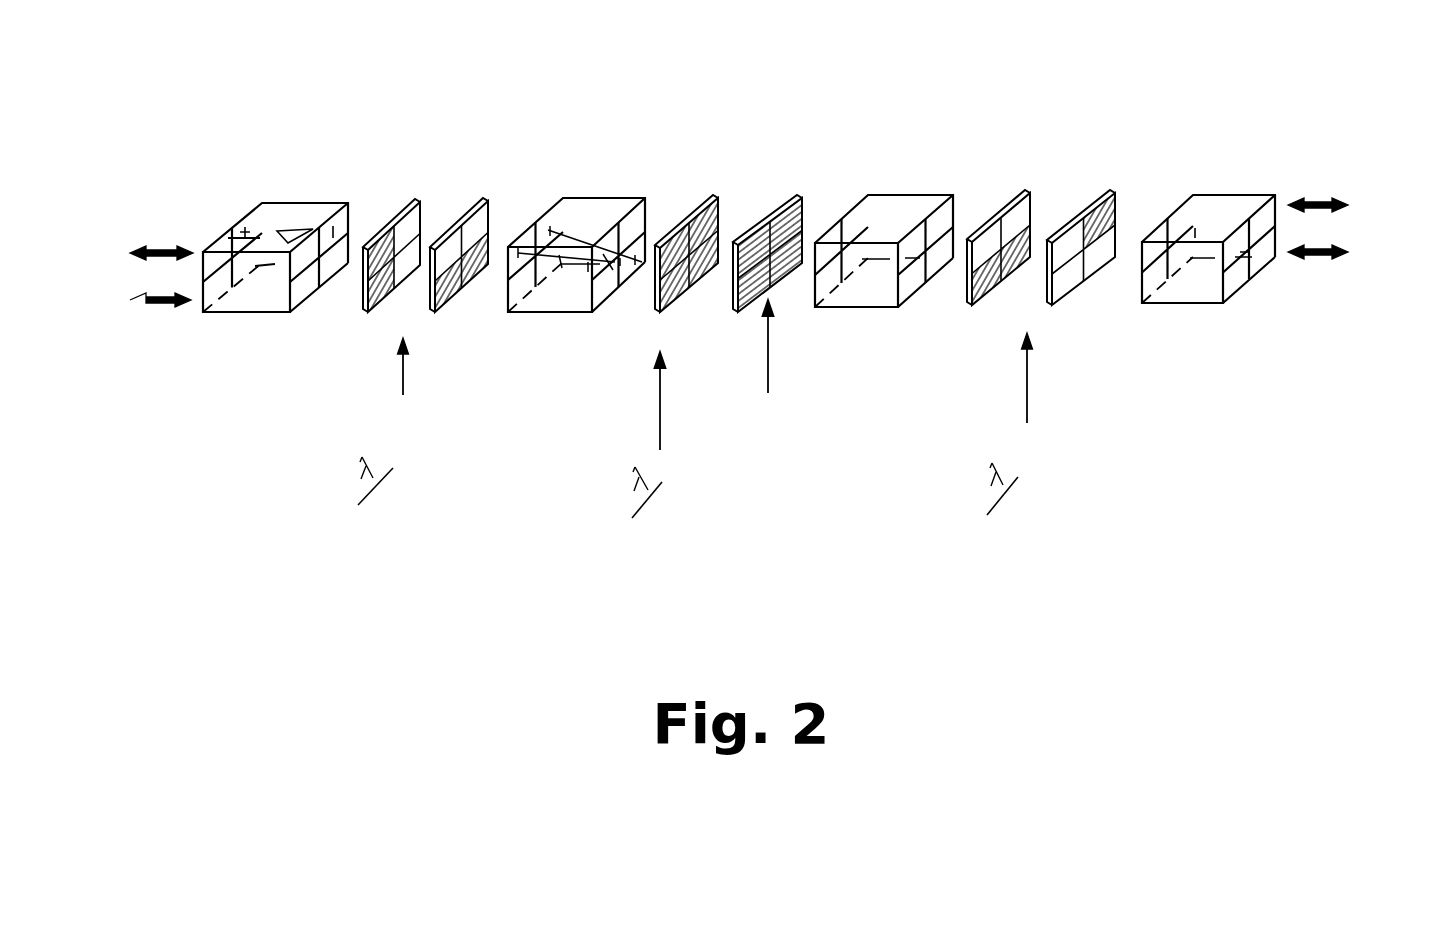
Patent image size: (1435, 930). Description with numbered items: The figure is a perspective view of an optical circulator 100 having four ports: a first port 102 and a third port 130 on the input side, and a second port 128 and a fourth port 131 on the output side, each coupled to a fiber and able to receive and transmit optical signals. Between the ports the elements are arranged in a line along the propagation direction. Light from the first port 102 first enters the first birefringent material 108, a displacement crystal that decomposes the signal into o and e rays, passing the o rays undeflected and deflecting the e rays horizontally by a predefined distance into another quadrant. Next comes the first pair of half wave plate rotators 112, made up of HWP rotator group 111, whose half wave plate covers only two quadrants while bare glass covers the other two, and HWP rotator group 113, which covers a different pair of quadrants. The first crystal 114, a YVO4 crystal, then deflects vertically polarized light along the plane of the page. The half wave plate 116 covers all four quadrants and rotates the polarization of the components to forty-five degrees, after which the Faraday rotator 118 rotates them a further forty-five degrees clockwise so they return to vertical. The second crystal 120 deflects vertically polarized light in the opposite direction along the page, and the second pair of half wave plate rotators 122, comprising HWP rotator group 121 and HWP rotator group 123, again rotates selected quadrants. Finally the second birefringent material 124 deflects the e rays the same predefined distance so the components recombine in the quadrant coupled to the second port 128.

The optical circulator 100 is at (737, 292).
The first port 102 is at (132, 254).
The first birefringent material 108 is at (227, 342).
The HWP rotator group 111 is at (410, 190).
The first pair of half wave plate rotators 112 is at (400, 447).
The HWP rotator group 113 is at (480, 190).
The first crystal 114 is at (598, 198).
The half wave plate 116 is at (725, 195).
The Faraday rotator 118 is at (812, 195).
The second crystal 120 is at (920, 195).
The HWP rotator group 121 is at (1032, 193).
The second pair of half wave plate rotators 122 is at (1027, 450).
The HWP rotator group 123 is at (1117, 193).
The second birefringent material 124 is at (1217, 172).
The second port 128 is at (1346, 207).
The third port 130 is at (131, 300).
The fourth port 131 is at (1346, 251).